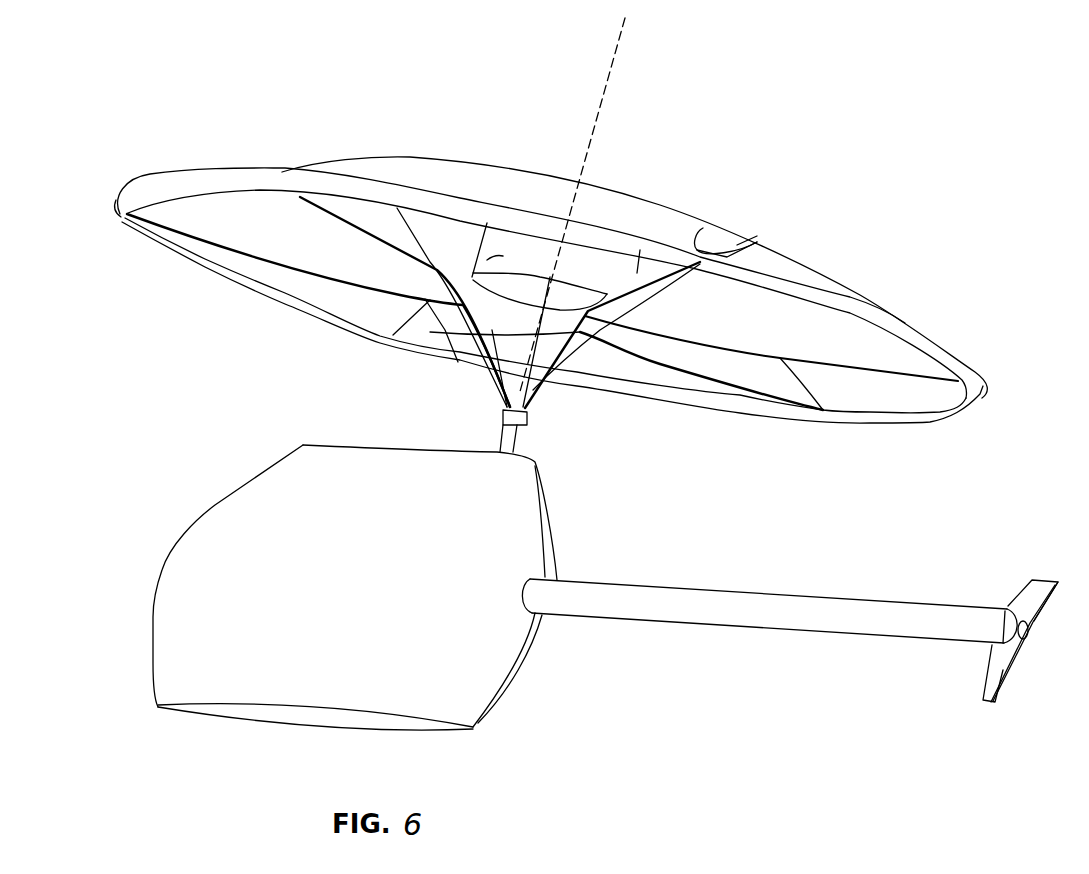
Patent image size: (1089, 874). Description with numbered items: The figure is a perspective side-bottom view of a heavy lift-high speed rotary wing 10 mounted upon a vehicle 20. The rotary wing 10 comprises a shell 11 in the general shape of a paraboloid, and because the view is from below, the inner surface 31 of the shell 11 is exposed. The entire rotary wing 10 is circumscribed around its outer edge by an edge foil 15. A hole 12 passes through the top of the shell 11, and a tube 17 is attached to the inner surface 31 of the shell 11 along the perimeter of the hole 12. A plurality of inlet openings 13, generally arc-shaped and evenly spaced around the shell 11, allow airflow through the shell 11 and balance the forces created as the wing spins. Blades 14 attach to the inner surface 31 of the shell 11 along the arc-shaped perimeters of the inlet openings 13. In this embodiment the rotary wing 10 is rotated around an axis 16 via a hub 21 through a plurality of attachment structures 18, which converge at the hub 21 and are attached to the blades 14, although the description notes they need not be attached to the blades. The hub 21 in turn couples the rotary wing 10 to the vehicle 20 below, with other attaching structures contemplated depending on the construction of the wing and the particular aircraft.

The heavy lift-high speed rotary wing 10 is at (175, 66).
The shell 11 is at (402, 171).
The hole 12 is at (515, 295).
The inlet openings 13 is at (221, 160).
The blades 14 is at (767, 258).
The edge foil 15 is at (116, 203).
The axis 16 is at (598, 115).
The tube 17 is at (460, 305).
The attachment structures 18 is at (528, 375).
The vehicle 20 is at (398, 612).
The hub 21 is at (532, 440).
The inner surface 31 is at (345, 300).